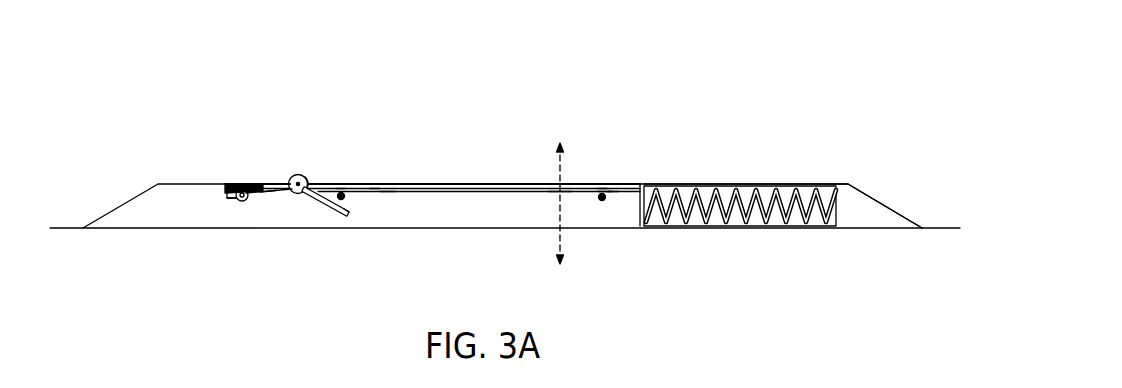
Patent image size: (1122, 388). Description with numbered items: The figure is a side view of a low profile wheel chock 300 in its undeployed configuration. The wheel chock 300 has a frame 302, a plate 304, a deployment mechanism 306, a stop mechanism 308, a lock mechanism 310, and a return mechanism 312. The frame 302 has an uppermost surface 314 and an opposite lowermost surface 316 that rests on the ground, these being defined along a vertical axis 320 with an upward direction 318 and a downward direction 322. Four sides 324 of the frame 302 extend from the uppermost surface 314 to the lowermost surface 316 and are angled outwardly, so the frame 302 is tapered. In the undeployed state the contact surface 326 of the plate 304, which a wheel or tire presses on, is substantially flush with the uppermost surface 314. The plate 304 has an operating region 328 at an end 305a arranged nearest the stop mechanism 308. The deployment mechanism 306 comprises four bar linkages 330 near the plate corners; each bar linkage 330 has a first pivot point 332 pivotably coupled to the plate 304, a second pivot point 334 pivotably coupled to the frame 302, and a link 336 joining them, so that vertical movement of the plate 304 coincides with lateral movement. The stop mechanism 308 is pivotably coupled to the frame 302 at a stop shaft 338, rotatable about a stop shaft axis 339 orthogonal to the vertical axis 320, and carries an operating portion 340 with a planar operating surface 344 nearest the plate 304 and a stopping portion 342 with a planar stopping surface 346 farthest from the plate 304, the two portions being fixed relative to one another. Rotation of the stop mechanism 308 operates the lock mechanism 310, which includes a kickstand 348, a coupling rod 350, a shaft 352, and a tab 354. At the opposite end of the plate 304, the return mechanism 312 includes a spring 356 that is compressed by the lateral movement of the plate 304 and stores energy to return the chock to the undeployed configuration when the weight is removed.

The low profile wheel chock 300 is at (718, 64).
The frame 302 is at (852, 187).
The plate 304 is at (520, 185).
The end of the plate 305a is at (308, 187).
The deployment mechanism 306 is at (392, 203).
The stop mechanism 308 is at (255, 176).
The lock mechanism 310 is at (268, 212).
The return mechanism 312 is at (762, 240).
The uppermost surface 314 is at (745, 183).
The lowermost surface 316 is at (933, 263).
The upward direction 318 is at (561, 143).
The vertical axis 320 is at (557, 213).
The downward direction 322 is at (558, 260).
The sides 324 is at (132, 203).
The contact surface 326 is at (470, 185).
The operating region 328 is at (392, 185).
The bar linkages 330 is at (353, 188).
The first pivot point 332 is at (340, 193).
The second pivot point 334 is at (375, 187).
The link 336 is at (347, 199).
The stop shaft 338 is at (288, 179).
The stop shaft axis 339 is at (298, 183).
The operating portion 340 is at (330, 210).
The stopping portion 342 is at (260, 194).
The operating surface 344 is at (350, 209).
The stopping surface 346 is at (233, 182).
The kickstand 348 is at (227, 186).
The coupling rod 350 is at (284, 196).
The shaft 352 is at (241, 202).
The tab 354 is at (231, 203).
The spring 356 is at (778, 185).